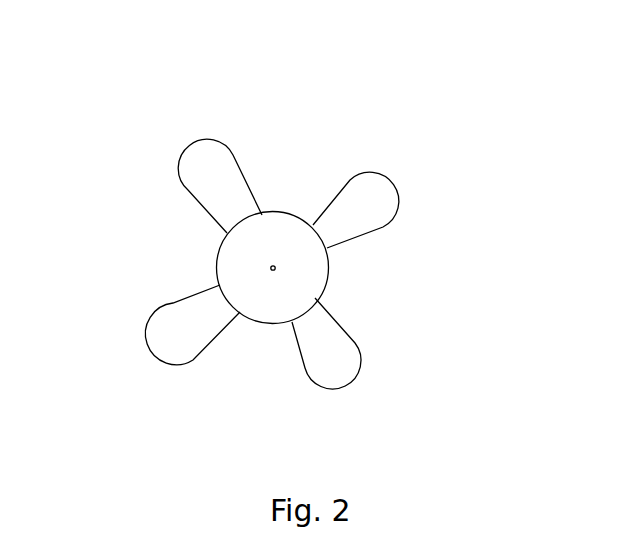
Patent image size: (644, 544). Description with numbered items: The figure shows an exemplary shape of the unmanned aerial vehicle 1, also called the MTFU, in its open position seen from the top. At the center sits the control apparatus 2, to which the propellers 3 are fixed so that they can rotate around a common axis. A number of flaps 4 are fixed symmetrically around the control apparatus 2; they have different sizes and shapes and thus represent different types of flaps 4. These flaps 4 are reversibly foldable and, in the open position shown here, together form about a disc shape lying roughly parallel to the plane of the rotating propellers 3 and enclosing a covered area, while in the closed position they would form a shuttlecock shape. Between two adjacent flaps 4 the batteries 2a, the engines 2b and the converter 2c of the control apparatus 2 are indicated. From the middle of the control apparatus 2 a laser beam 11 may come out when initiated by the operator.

The unmanned aerial vehicle 1 is at (426, 438).
The control apparatus 2 is at (253, 252).
The batteries 2a is at (247, 345).
The engines 2b is at (235, 382).
The converter 2c is at (230, 418).
The propeller 3 is at (320, 367).
The flaps 4 is at (347, 125).
The laser beam 11 is at (273, 266).